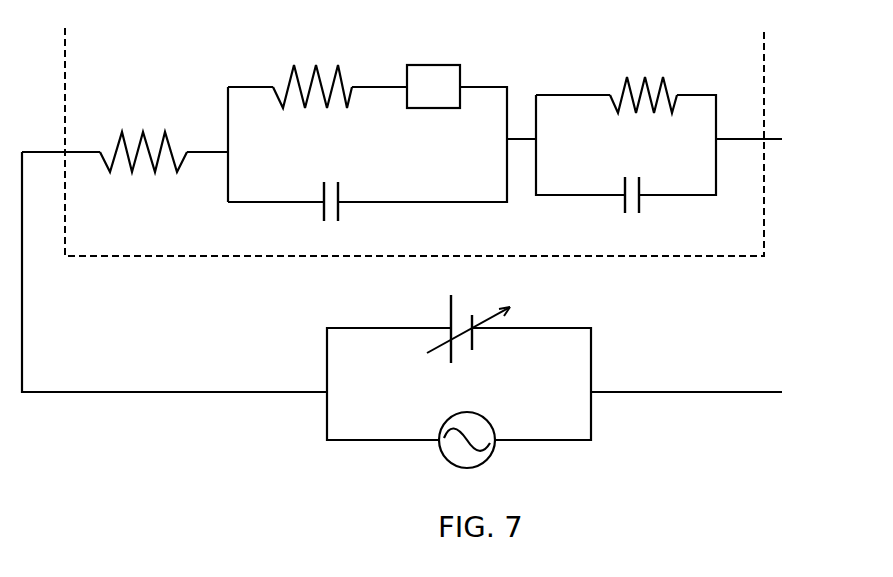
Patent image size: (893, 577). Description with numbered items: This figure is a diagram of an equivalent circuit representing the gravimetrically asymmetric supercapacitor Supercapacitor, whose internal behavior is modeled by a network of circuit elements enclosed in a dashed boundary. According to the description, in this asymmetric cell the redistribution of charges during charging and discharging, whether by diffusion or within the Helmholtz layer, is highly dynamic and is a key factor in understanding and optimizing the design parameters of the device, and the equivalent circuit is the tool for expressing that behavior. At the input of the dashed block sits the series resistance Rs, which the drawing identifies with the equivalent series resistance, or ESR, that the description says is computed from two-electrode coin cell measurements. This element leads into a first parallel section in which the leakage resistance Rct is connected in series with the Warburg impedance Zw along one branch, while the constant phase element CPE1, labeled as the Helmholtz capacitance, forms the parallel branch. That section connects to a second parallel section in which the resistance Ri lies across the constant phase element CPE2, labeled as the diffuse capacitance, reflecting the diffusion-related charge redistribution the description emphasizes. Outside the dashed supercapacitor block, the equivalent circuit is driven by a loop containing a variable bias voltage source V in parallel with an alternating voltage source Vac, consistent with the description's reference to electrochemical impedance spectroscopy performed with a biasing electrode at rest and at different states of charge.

The supercapacitor Supercapacitor is at (414, 152).
The equivalent series resistance (ESR) Rs is at (143, 150).
The leakage (charge transfer) resistance Rct is at (268, 70).
The Warburg impedance element Zw is at (433, 70).
The constant phase element 1 (Helmholtz capacitance) CPE1 is at (331, 205).
The resistance Ri is at (643, 79).
The constant phase element 2 (diffuse capacitance) CPE2 is at (620, 201).
The variable DC bias voltage source V is at (466, 329).
The AC voltage source Vac is at (477, 440).